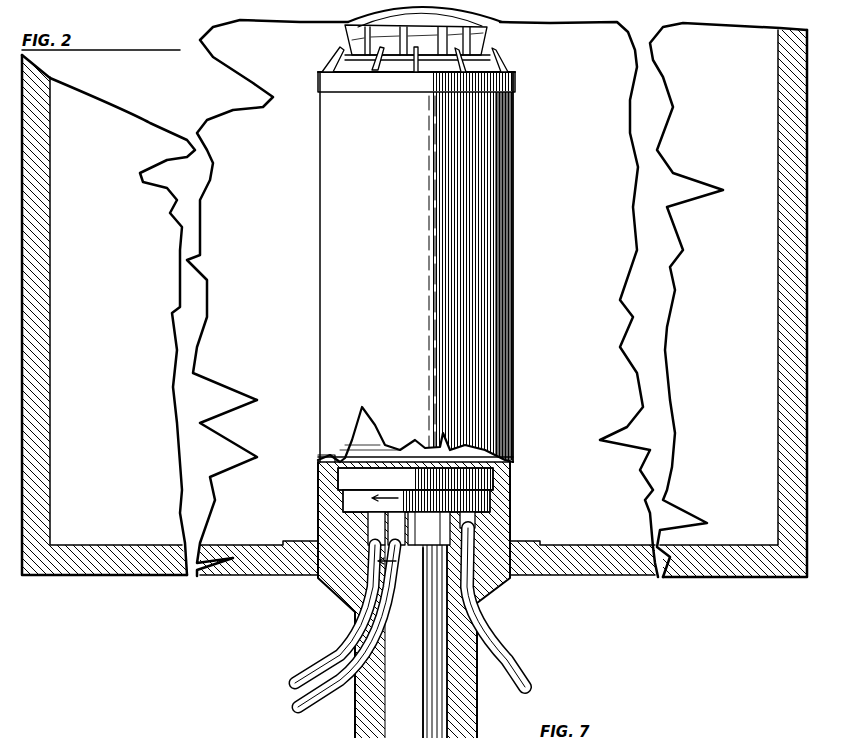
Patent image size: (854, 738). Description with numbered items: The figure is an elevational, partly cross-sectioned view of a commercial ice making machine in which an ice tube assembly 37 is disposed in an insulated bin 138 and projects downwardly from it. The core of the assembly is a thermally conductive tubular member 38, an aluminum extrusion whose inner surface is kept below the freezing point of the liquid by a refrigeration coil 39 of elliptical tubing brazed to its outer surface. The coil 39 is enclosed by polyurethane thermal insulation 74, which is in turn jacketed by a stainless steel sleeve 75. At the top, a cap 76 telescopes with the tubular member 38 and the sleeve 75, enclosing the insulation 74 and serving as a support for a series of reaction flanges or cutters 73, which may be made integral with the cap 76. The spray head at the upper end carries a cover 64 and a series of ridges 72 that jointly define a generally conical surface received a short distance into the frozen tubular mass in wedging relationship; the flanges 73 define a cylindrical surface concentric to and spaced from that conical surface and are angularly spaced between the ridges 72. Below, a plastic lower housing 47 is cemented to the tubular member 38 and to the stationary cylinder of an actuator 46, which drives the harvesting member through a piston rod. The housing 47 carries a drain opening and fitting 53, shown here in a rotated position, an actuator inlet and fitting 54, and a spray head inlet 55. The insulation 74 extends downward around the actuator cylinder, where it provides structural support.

The insulated bin 138 is at (45, 353).
The ice tube assembly 37 is at (527, 247).
The sleeve 75 is at (320, 275).
The cap 76 is at (318, 76).
The ridges 72 is at (356, 31).
The cover 64 is at (484, 23).
The reaction flanges or cutters 73 is at (377, 62).
The refrigeration coil 39 is at (373, 450).
The tubular member 38 is at (318, 463).
The thermal insulation 74 is at (323, 517).
The lower housing 47 is at (497, 473).
The drain opening and fitting 53 is at (480, 522).
The spray head inlet 55 is at (372, 553).
The actuator inlet and fitting 54 is at (390, 562).
The actuator 46 is at (382, 720).